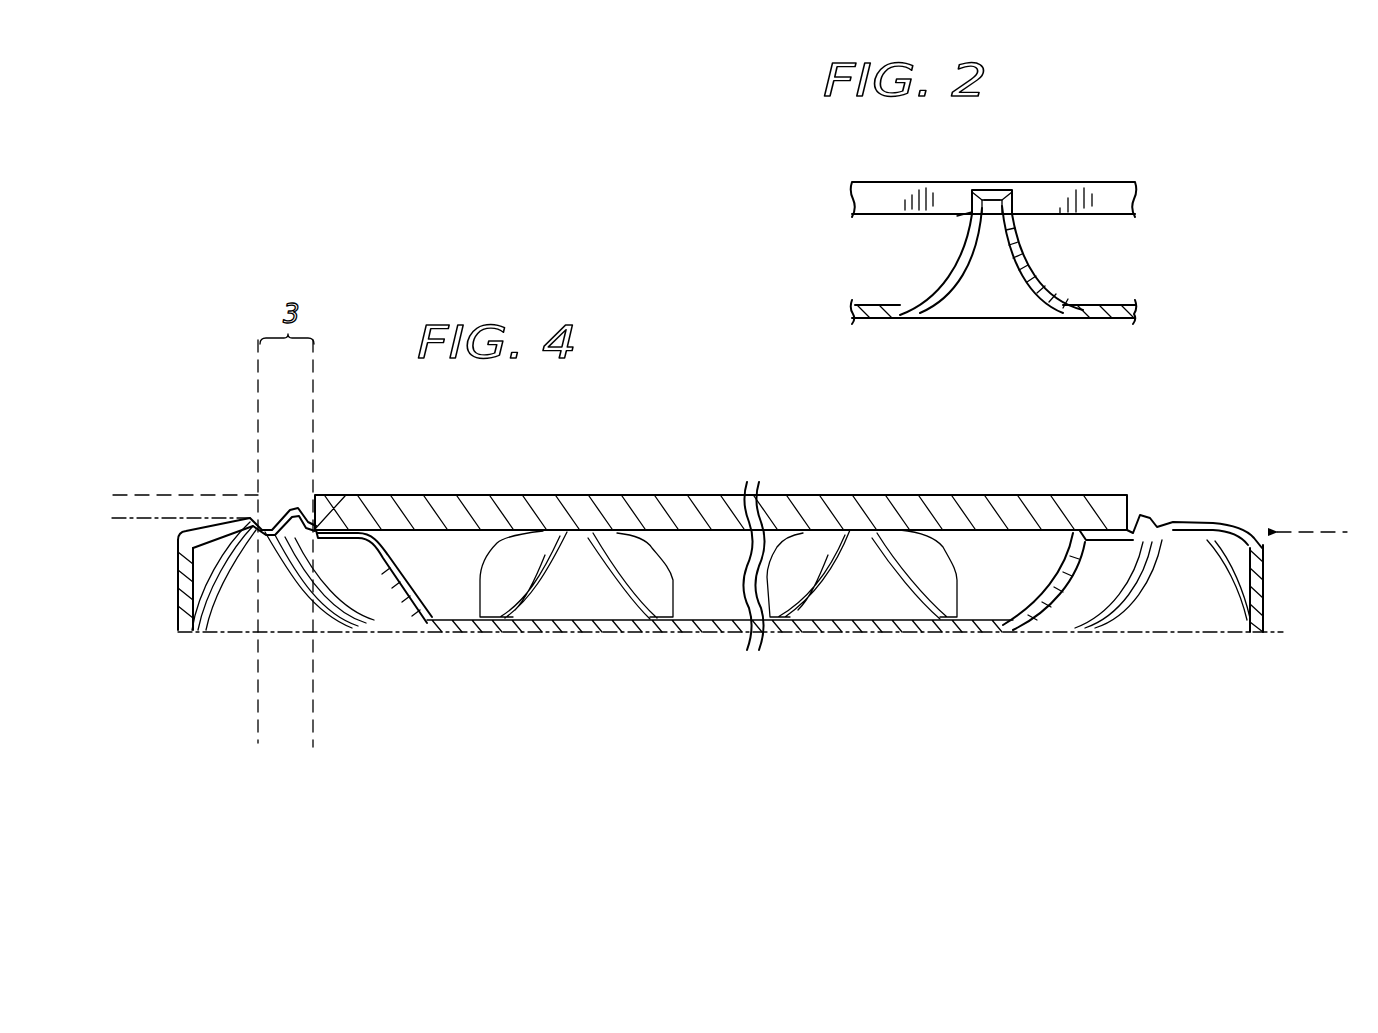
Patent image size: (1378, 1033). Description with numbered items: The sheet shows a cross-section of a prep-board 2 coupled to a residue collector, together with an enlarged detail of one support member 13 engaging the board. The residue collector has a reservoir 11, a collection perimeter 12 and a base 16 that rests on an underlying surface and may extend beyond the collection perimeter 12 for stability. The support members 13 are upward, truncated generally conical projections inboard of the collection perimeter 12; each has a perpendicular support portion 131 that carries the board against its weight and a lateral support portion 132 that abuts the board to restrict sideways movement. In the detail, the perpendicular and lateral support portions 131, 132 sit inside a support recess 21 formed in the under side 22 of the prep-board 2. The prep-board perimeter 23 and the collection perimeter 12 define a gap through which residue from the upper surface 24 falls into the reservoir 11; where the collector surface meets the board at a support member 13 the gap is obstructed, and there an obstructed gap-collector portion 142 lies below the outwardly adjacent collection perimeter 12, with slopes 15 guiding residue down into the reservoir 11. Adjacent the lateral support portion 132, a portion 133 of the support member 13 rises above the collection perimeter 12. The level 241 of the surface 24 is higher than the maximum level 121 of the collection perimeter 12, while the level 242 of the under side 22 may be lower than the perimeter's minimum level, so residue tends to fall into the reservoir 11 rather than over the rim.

In FIG. 4, the prep-board 2 is at (1130, 500).
In FIG. 4, the reservoir 11 is at (695, 575).
In FIG. 4, the collection perimeter 12 is at (257, 755).
In FIG. 2, the support member 13 is at (915, 250).
In FIG. 4, the support member 13 is at (380, 568).
In FIG. 4, the slope 15 is at (653, 607).
In FIG. 4, the base 16 is at (178, 632).
In FIG. 2, the support recess 21 is at (960, 214).
In FIG. 2, the under side 22 is at (1115, 217).
In FIG. 4, the under side 22 is at (710, 533).
In FIG. 4, the prep-board perimeter 23 is at (313, 758).
In FIG. 4, the surface 24 is at (643, 495).
In FIG. 4, the maximum level of the collection perimeter 121 is at (112, 518).
In FIG. 2, the perpendicular support portion 131 is at (990, 192).
In FIG. 4, the perpendicular support portion 131 is at (357, 503).
In FIG. 2, the lateral support portion 132 is at (972, 198).
In FIG. 4, the lateral support portion 132 is at (313, 510).
In FIG. 4, the portion of the support member above the collection perimeter 133 is at (307, 517).
In FIG. 4, the obstructed gap-collector portion 142 is at (277, 513).
In FIG. 4, the level of the prep-board surface 241 is at (113, 495).
In FIG. 4, the level of the under side of the prep-board 242 is at (1348, 532).